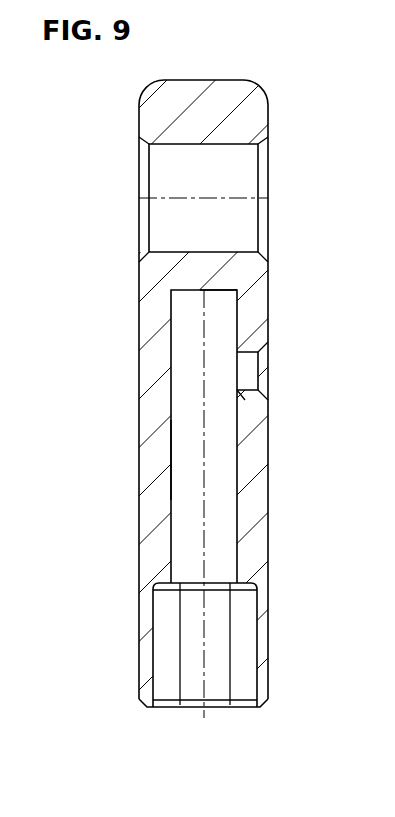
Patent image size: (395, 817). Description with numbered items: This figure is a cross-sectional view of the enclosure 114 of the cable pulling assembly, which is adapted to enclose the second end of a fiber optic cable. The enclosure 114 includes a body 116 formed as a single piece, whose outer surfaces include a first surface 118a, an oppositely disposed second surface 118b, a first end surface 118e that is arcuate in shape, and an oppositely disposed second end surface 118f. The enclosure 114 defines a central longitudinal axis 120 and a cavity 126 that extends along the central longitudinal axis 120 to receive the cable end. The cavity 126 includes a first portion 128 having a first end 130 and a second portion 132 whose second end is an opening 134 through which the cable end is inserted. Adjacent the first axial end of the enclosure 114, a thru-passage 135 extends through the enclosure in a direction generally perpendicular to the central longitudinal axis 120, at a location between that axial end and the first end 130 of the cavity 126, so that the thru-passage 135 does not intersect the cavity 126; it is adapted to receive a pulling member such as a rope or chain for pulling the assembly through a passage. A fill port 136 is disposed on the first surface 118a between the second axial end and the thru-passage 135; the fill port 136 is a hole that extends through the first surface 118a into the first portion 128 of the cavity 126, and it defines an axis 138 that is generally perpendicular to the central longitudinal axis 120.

The enclosure 114 is at (120, 145).
The body 116 is at (129, 327).
The first surface 118a is at (268, 450).
The second surface 118b is at (139, 393).
The first end surface 118e is at (206, 80).
The second end surface 118f is at (265, 707).
The central longitudinal axis 120 is at (203, 688).
The cavity 126 is at (231, 531).
The first portion 128 is at (172, 455).
The first end 130 is at (216, 290).
The second portion 132 is at (257, 647).
The opening 134 is at (258, 684).
The thru-passage 135 is at (227, 252).
The fill port 136 is at (241, 398).
The axis 138 is at (226, 374).